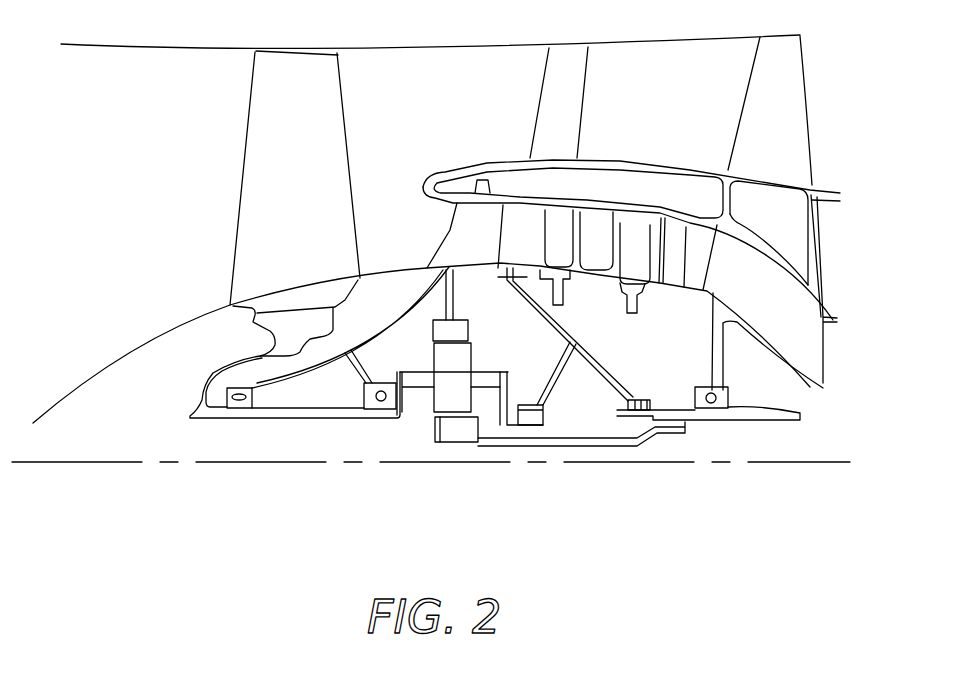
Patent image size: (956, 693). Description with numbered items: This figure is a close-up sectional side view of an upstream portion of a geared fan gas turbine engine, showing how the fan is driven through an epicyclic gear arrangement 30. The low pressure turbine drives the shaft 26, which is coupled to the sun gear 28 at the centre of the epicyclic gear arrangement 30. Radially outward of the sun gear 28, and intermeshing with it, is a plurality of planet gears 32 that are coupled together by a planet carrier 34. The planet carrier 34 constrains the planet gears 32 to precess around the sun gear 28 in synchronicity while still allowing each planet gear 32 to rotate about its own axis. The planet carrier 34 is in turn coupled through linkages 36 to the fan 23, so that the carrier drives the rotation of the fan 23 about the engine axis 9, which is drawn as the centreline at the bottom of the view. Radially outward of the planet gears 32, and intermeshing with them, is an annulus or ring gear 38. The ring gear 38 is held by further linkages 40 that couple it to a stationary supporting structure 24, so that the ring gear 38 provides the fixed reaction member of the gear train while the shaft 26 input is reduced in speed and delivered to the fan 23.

The engine axis 9 is at (127, 462).
The fan 23 is at (270, 178).
The stationary supporting structure 24 is at (456, 230).
The shaft 26 is at (693, 417).
The sun gear 28 is at (455, 430).
The epicyclic gear arrangement 30 is at (422, 413).
The planet gears 32 is at (438, 402).
The planet carrier 34 is at (505, 402).
The linkages 36 is at (411, 407).
The ring gear 38 is at (458, 330).
The linkages 40 is at (458, 300).